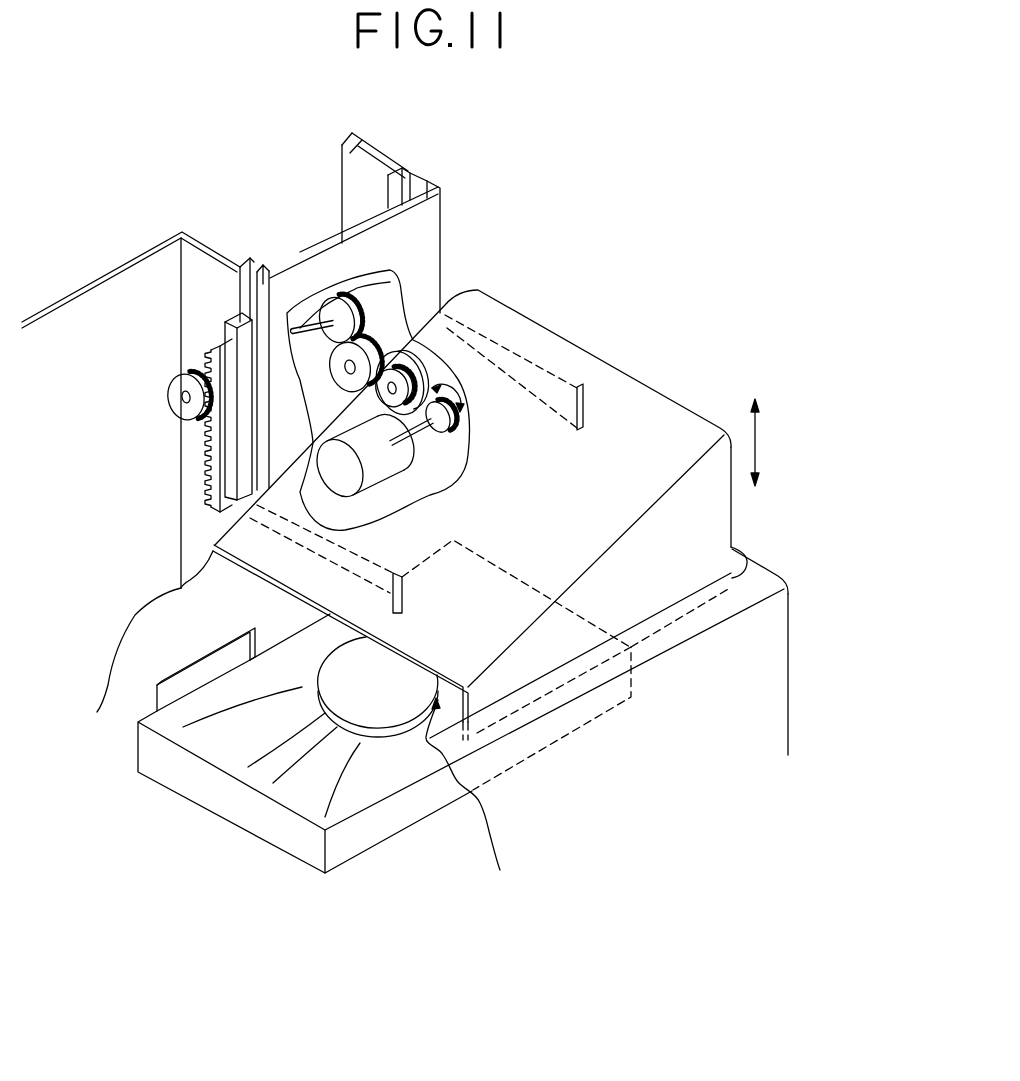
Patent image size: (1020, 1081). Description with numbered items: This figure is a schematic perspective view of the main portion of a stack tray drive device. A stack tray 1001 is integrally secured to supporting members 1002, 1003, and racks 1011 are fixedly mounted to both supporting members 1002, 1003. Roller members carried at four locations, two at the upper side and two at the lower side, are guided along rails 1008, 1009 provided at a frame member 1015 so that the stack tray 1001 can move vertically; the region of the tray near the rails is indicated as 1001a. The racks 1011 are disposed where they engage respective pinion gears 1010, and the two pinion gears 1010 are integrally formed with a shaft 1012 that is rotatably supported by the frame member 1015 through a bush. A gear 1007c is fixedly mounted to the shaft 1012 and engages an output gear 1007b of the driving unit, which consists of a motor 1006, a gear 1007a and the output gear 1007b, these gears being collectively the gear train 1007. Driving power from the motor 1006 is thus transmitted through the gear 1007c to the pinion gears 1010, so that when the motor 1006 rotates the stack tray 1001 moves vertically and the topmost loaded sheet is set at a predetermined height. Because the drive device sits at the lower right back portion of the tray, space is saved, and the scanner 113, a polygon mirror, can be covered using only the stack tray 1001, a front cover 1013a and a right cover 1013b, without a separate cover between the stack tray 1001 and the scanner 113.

The frame member 1015 is at (190, 287).
The pinion gear 1010 is at (177, 398).
The rack 1011 is at (225, 445).
The supporting member 1002 is at (232, 318).
The rail 1008 is at (262, 264).
The rail 1009 is at (410, 180).
The shaft 1012 is at (305, 325).
The motor 1006 is at (338, 477).
The gears 1007 is at (500, 319).
The gear 1007a is at (396, 352).
The output gear 1007b is at (366, 345).
The gear 1007c is at (352, 300).
The supporting member 1003 is at (580, 386).
The stack tray 1001 is at (526, 540).
The side wall of housing 1001a is at (720, 508).
The scanner 113 is at (514, 703).
The front cover 1013a is at (780, 656).
The right cover 1013b is at (741, 560).